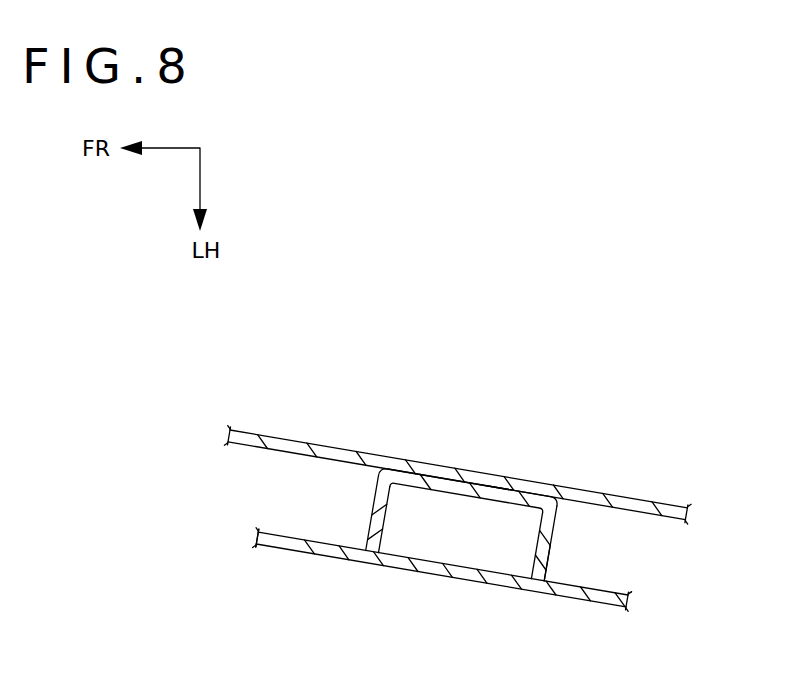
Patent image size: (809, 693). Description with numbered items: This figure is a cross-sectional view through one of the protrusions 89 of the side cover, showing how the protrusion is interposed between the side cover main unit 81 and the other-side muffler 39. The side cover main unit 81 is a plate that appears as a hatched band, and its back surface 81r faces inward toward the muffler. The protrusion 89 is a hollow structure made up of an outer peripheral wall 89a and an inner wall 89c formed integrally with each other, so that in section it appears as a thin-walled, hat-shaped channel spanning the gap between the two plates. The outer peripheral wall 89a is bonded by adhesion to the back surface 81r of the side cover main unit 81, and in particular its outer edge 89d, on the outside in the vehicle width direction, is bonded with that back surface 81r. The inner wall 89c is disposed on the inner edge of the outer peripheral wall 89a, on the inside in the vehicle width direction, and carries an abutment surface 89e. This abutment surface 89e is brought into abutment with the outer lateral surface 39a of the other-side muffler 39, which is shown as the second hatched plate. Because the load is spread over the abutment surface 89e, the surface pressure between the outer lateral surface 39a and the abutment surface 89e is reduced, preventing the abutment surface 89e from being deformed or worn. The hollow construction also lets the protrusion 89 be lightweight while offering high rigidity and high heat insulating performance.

The other-side muffler 39 is at (667, 521).
The outer lateral surface 39a is at (487, 489).
The side cover main unit 81 is at (321, 559).
The back surface 81r is at (293, 537).
The protrusion 89 is at (368, 507).
The outer peripheral wall 89a is at (562, 543).
The inner wall 89c is at (440, 504).
The outer edge 89d is at (534, 580).
The abutment surface 89e is at (428, 472).